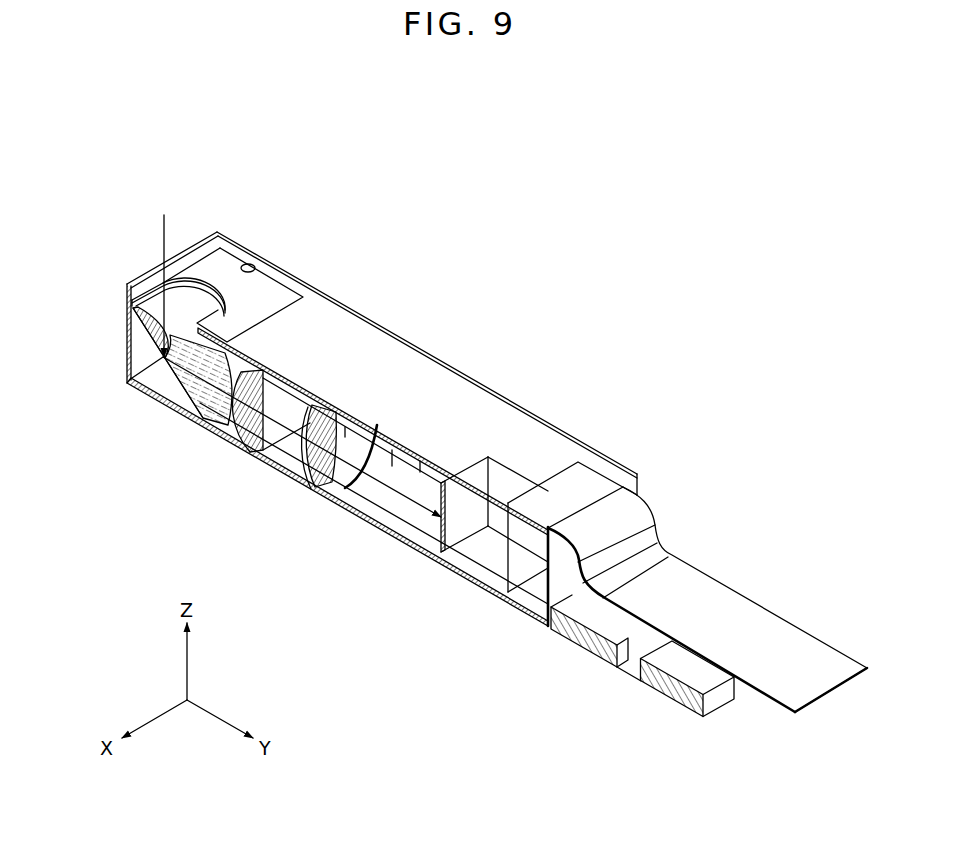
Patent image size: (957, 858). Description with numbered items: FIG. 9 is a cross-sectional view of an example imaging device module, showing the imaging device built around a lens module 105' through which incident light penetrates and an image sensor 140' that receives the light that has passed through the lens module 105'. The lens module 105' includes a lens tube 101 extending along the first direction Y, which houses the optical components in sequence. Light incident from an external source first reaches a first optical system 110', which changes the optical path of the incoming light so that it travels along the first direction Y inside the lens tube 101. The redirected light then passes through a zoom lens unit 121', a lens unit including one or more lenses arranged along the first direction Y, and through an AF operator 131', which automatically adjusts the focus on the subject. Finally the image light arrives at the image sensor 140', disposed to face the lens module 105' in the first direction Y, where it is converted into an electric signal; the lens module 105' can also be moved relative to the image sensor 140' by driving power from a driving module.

The lens tube 101 is at (445, 388).
The lens module 105' is at (110, 289).
The first optical system 110' is at (182, 395).
The zoom lens unit 121' is at (260, 445).
The AF operator 131' is at (303, 480).
The image sensor 140' is at (444, 537).